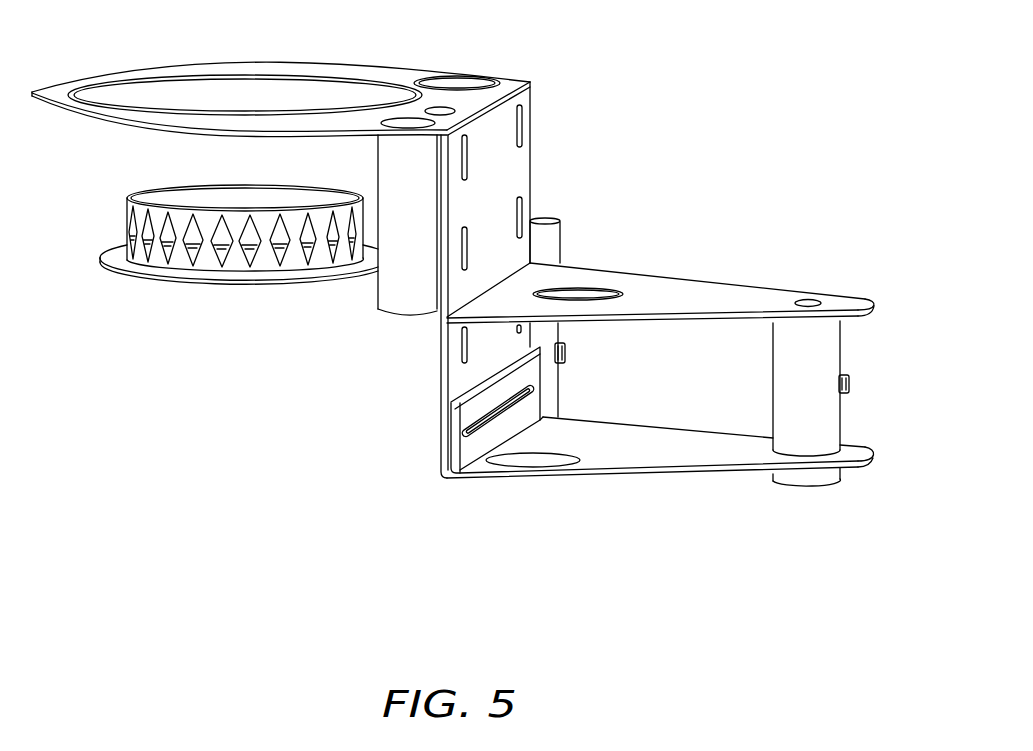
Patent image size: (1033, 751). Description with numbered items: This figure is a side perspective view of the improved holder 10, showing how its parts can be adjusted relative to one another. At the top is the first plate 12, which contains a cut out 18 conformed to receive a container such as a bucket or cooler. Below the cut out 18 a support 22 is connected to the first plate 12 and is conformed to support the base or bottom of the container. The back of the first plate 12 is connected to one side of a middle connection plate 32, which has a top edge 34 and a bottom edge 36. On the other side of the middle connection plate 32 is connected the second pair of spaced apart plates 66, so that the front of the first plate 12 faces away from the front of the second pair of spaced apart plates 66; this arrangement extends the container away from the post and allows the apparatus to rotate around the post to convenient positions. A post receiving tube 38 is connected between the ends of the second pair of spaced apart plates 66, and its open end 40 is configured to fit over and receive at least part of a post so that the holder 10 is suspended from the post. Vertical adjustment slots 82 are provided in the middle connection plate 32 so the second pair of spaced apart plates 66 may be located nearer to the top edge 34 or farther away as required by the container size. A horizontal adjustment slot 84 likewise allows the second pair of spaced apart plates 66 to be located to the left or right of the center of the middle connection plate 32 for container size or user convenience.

The improved holder 10 is at (784, 161).
The first plate 12 is at (57, 89).
The cut out 18 is at (239, 90).
The support 22 is at (347, 273).
The middle connection plate 32 is at (455, 300).
The top edge 34 is at (529, 80).
The bottom edge 36 is at (445, 470).
The post receiving tube 38 is at (828, 430).
The open end 40 is at (804, 503).
The second pair of spaced apart plates 66 is at (872, 347).
The vertical adjustment slots 82 is at (466, 230).
The horizontal adjustment slot 84 is at (517, 410).